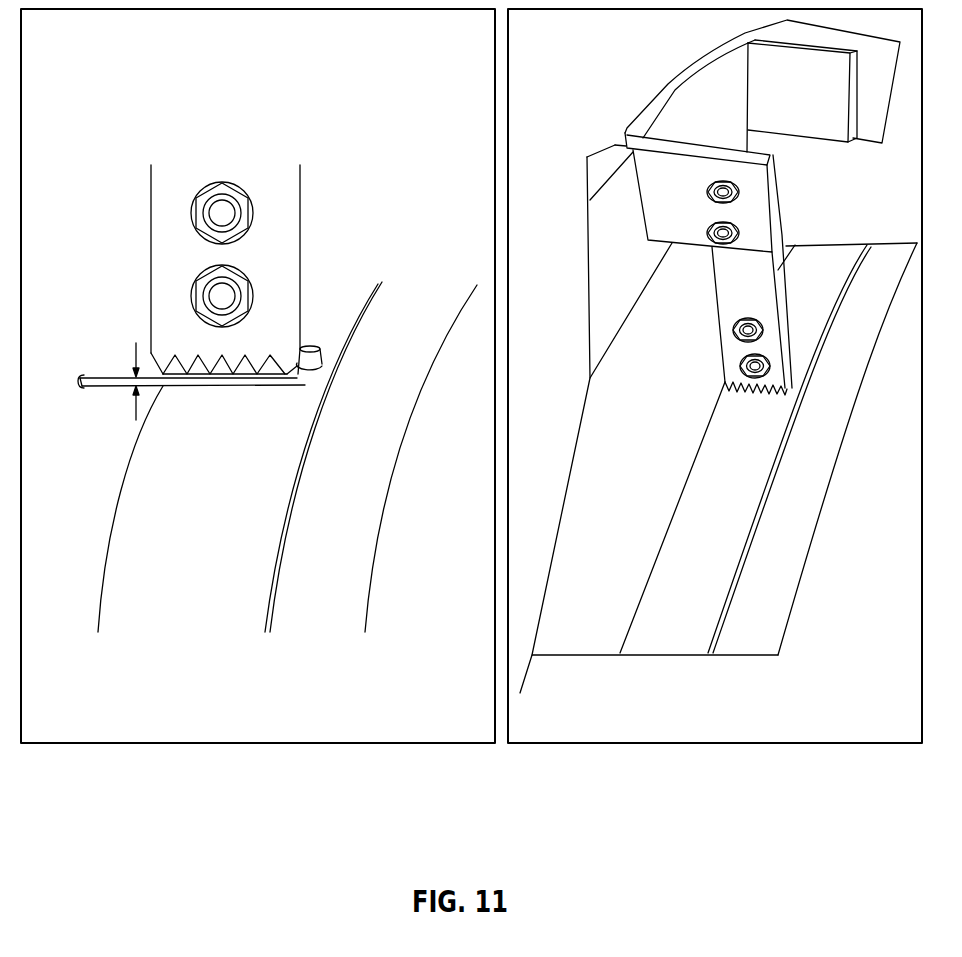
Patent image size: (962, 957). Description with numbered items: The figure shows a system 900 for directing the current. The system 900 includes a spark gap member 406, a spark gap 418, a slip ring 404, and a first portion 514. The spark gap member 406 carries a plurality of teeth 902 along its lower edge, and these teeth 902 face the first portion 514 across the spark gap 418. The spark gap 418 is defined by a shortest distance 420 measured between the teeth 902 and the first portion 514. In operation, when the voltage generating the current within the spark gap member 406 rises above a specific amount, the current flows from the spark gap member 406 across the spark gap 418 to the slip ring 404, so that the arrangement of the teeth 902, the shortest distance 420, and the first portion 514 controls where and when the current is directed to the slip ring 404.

The system 900 is at (188, 118).
The spark gap member 406 is at (277, 203).
The shortest distance 420 is at (77, 382).
The spark gap 418 is at (199, 378).
The teeth 902 is at (210, 360).
The first portion 514 is at (343, 543).
The slip ring 404 is at (684, 574).